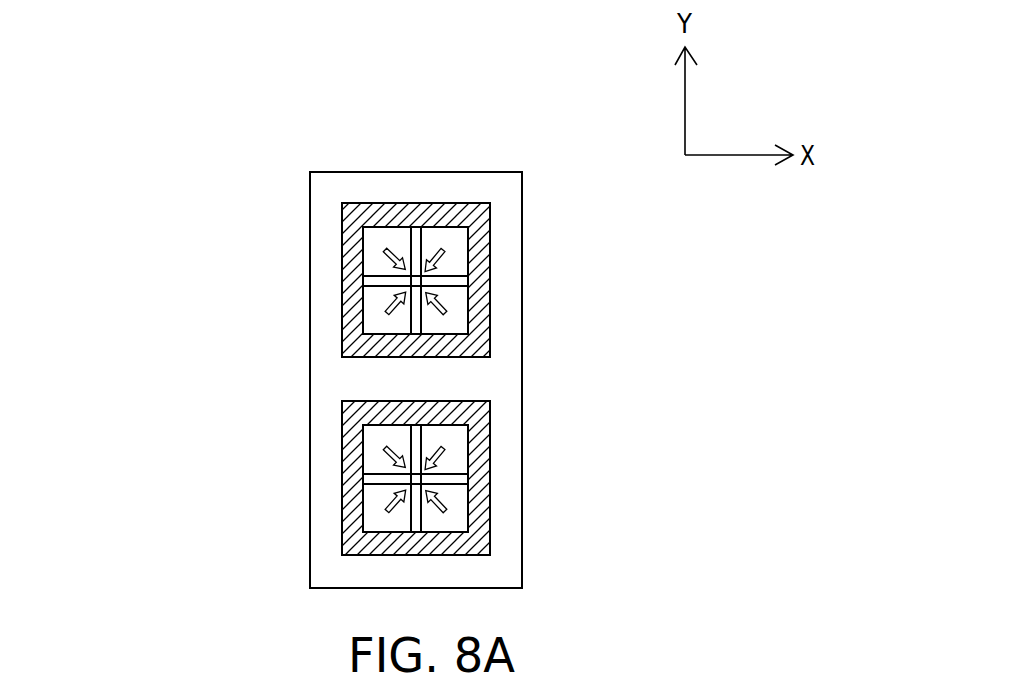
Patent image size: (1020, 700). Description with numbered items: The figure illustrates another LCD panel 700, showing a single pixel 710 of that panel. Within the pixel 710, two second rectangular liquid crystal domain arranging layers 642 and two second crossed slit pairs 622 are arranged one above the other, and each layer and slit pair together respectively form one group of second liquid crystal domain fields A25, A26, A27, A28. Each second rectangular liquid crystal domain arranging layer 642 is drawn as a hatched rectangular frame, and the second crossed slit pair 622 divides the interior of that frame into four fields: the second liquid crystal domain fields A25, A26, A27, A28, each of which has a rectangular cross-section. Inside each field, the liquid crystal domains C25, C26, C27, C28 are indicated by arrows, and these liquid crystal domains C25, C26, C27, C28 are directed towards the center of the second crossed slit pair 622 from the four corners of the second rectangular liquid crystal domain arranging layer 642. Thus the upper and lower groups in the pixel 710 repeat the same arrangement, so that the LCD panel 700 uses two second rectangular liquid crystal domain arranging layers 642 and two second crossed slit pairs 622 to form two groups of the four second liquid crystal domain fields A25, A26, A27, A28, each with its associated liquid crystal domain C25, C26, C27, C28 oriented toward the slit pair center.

The LCD panel 700 is at (97, 116).
The pixel 710 is at (432, 158).
The second crossed slit pair 622 is at (413, 243).
The second rectangular liquid crystal domain arranging layer 642 is at (343, 222).
The second liquid crystal domain field A25 is at (368, 268).
The second liquid crystal domain field A26 is at (458, 263).
The second liquid crystal domain field A27 is at (460, 299).
The second liquid crystal domain field A28 is at (368, 328).
The liquid crystal domain C25 is at (384, 262).
The liquid crystal domain C26 is at (444, 250).
The liquid crystal domain C27 is at (445, 312).
The liquid crystal domain C28 is at (384, 309).